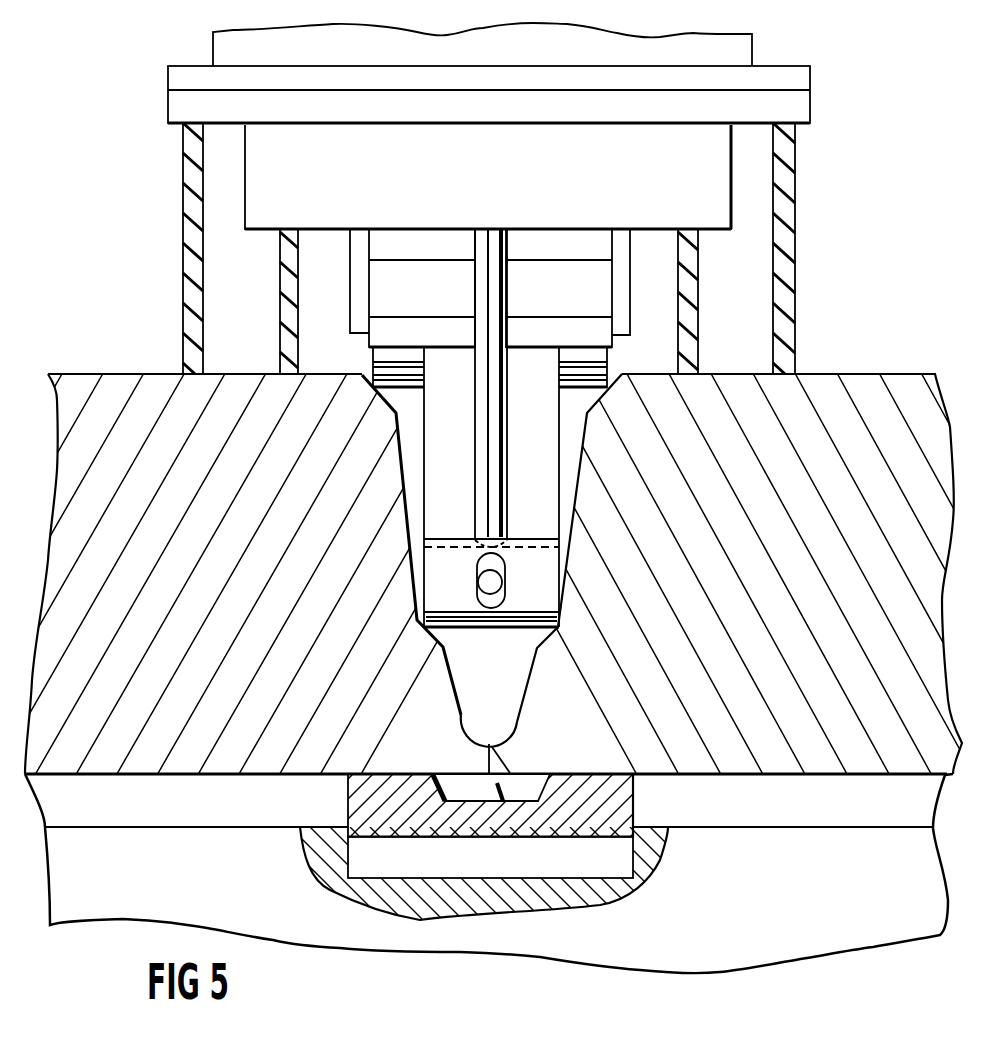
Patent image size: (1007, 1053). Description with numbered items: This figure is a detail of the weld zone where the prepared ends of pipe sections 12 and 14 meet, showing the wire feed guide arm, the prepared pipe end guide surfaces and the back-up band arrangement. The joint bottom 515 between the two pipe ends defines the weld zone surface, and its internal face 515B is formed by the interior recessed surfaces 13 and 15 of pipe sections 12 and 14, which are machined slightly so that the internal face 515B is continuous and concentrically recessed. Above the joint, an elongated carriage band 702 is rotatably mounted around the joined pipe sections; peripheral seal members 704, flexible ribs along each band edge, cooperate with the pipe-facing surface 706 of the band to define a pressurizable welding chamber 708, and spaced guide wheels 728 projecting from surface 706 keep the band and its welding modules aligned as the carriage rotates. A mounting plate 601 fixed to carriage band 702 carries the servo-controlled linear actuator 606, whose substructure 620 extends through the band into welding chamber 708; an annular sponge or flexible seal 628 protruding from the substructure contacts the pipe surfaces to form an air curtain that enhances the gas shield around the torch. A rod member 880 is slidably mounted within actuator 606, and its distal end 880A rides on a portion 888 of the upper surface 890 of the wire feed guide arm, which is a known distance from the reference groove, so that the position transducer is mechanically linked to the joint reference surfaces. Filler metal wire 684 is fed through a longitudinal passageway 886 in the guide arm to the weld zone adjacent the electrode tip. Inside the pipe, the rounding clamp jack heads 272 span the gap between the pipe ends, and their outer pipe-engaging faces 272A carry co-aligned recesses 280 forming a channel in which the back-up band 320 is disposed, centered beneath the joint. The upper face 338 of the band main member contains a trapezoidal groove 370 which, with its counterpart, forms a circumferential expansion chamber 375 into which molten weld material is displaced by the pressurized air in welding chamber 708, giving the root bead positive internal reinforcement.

The servo-controlled linear actuator 606 is at (212, 48).
The mounting plate 601 is at (168, 80).
The carriage band 702 is at (810, 108).
The substructure 620 is at (262, 178).
The pipe-facing surface 706 is at (745, 127).
The seal members 704 is at (796, 245).
The seal 628 is at (292, 322).
The welding chamber 708 is at (749, 302).
The guide wheels 728 is at (461, 364).
The rod member 880 is at (503, 450).
The distal end of rod member 880A is at (483, 542).
The upper surface of guide arm 890 is at (540, 488).
The portion of upper surface 888 is at (533, 540).
The filler metal wire 684 is at (487, 580).
The longitudinal passageway 886 is at (487, 604).
The pipe section 12 is at (154, 647).
The pipe section 14 is at (807, 635).
The joint bottom 515 is at (504, 717).
The internal face of joint bottom 515B is at (503, 783).
The interior recessed surface 13 is at (185, 775).
The interior recessed surface 15 is at (772, 775).
The upper face of main member 338 is at (348, 776).
The back-up band 320 is at (633, 790).
The expansion chamber 375 is at (502, 795).
The recess or groove 370 is at (460, 795).
The recesses 280 is at (660, 868).
The jack heads 272 is at (746, 934).
The pipe-engaging faces 272A is at (810, 823).